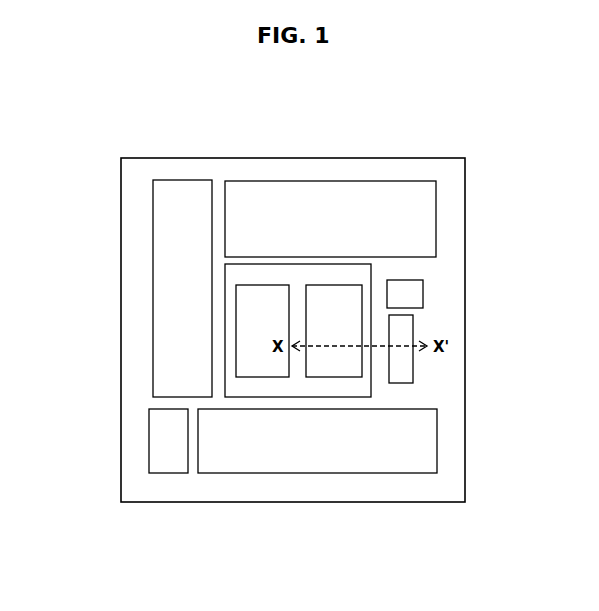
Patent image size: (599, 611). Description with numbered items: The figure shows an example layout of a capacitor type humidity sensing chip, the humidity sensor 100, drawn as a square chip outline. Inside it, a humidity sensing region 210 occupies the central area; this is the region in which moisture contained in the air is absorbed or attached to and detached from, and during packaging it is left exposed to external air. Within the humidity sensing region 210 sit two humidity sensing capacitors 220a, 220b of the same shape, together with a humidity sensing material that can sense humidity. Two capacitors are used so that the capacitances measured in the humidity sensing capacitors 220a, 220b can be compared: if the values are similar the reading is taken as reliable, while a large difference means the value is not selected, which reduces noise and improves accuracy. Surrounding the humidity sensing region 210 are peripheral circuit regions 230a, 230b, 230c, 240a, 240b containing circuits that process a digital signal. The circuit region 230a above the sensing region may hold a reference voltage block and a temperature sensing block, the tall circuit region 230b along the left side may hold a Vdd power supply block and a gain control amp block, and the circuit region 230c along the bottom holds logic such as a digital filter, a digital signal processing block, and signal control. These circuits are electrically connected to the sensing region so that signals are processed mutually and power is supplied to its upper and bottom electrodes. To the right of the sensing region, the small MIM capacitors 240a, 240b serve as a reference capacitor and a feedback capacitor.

The humidity sensor 100 is at (303, 125).
The humidity sensing region 210 is at (353, 387).
The humidity sensing capacitor 220a is at (262, 359).
The humidity sensing capacitor 220b is at (325, 360).
The circuit region 230a is at (385, 220).
The circuit region 230b is at (182, 313).
The circuit region 230c is at (238, 455).
The MIM capacitor 240a is at (407, 296).
The MIM capacitor 240b is at (402, 365).